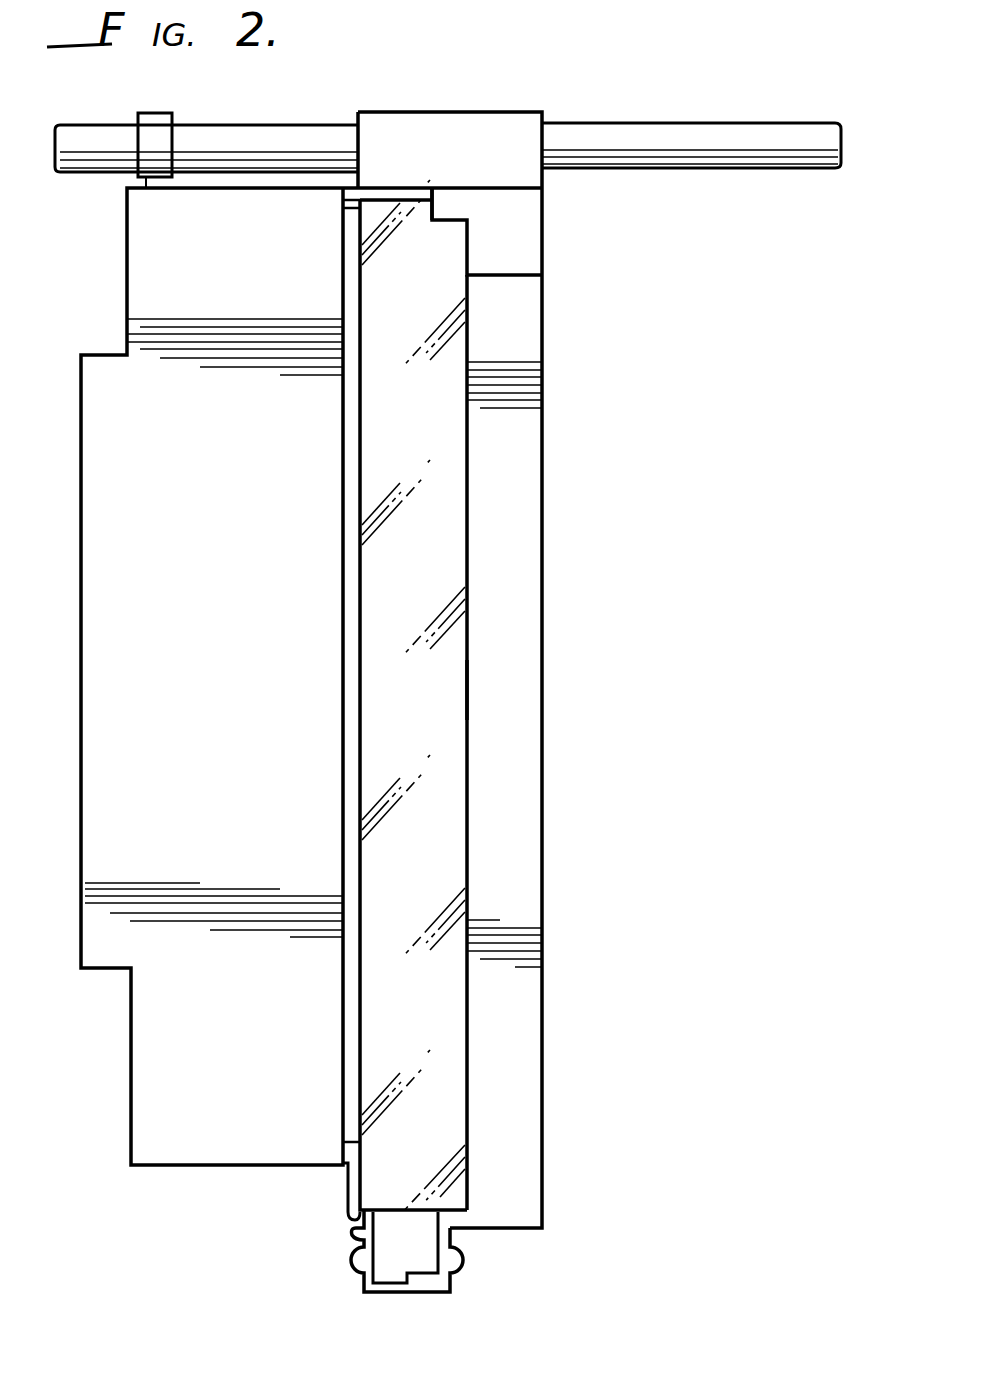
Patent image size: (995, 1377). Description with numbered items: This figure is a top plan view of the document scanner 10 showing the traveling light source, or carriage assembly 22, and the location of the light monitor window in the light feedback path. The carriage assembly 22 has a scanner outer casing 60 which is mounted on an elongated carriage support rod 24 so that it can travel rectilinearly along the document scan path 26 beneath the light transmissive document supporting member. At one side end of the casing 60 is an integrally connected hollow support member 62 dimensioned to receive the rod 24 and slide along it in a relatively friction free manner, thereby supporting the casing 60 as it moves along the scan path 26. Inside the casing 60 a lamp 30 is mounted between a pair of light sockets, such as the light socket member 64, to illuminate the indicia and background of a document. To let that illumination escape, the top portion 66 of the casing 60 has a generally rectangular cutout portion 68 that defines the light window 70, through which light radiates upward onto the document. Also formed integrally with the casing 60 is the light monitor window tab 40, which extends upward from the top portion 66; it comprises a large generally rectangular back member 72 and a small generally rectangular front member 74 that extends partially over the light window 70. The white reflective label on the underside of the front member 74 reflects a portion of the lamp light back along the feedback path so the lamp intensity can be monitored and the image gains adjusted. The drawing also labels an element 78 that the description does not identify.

The sliding panel assembly 10 is at (121, 1292).
The carriage assembly 22 is at (600, 347).
The carriage support rod 24 is at (693, 123).
The document scan path 26 is at (677, 185).
The lamp 30 is at (387, 1240).
The light monitor window tab 40 is at (515, 205).
The outer casing 60 is at (543, 484).
The hollow support member 62 is at (545, 114).
The light socket member 64 is at (450, 1275).
The top portion 66 is at (530, 597).
The cutout portion 68 is at (468, 701).
The light window 70 is at (443, 818).
The back member 72 is at (532, 243).
The front member 74 is at (447, 198).
The seal strip 78 is at (356, 1217).